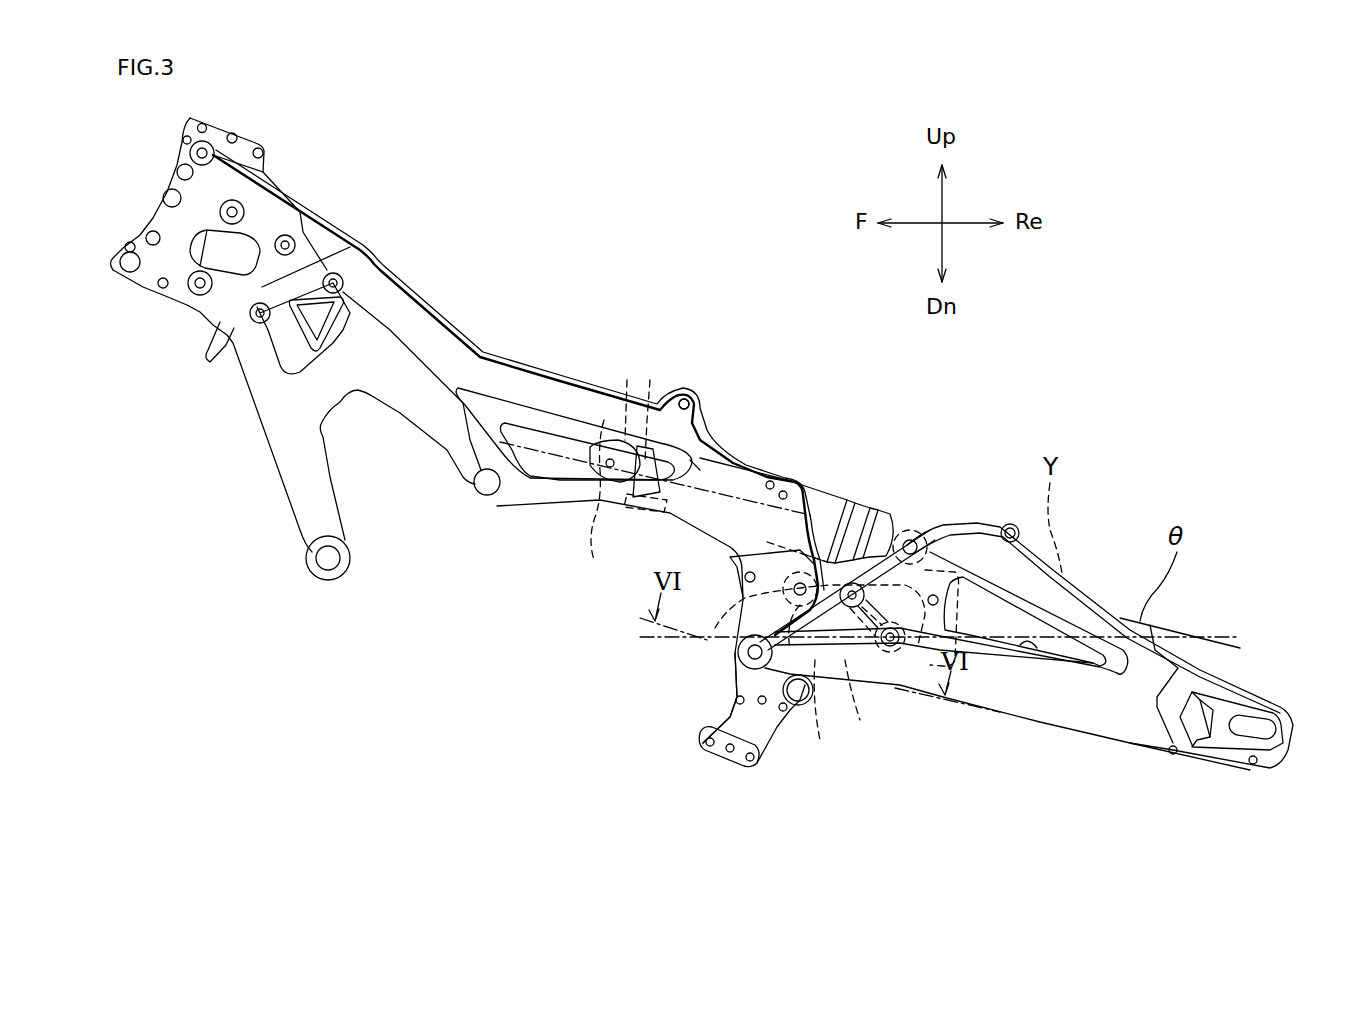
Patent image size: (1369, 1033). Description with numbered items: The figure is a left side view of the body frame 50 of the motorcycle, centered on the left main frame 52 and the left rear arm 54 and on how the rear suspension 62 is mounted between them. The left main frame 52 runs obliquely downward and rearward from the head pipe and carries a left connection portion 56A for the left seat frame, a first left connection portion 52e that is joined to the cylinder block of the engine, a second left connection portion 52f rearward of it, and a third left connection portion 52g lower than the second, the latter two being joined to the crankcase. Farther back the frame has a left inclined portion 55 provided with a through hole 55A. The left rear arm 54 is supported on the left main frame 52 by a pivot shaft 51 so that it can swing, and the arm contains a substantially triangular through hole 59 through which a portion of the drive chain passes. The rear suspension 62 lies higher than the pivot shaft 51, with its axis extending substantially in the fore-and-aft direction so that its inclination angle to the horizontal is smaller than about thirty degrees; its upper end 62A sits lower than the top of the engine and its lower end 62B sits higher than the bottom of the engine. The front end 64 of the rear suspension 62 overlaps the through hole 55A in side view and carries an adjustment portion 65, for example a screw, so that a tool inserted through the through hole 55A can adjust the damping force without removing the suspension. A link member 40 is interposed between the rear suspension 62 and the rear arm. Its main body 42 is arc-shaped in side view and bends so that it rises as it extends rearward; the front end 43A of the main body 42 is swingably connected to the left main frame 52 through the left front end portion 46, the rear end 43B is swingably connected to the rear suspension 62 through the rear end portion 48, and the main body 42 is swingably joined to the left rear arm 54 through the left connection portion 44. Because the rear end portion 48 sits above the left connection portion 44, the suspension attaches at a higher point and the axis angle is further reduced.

The link member 40 is at (835, 641).
The main body 42 is at (850, 578).
The front end 43A is at (750, 577).
The rear end 43B is at (915, 528).
The left connection portion 44 is at (888, 668).
The left front end portion 46 is at (731, 645).
The rear end portion 48 is at (898, 538).
The body frame 50 is at (1112, 418).
The pivot shaft 51 is at (733, 668).
The left main frame 52 is at (396, 280).
The first left connection portion 52e is at (487, 480).
The second left connection portion 52f is at (788, 563).
The third left connection portion 52g is at (705, 738).
The left rear arm 54 is at (1123, 746).
The left inclined portion 55 is at (635, 425).
The through hole 55A is at (698, 470).
The left connection portion 56A is at (684, 394).
The through hole 59 is at (1028, 650).
The rear suspension 62 is at (769, 472).
The upper end 62A is at (656, 380).
The lower end 62B is at (833, 615).
The front end 64 is at (607, 463).
The adjustment portion 65 is at (621, 503).